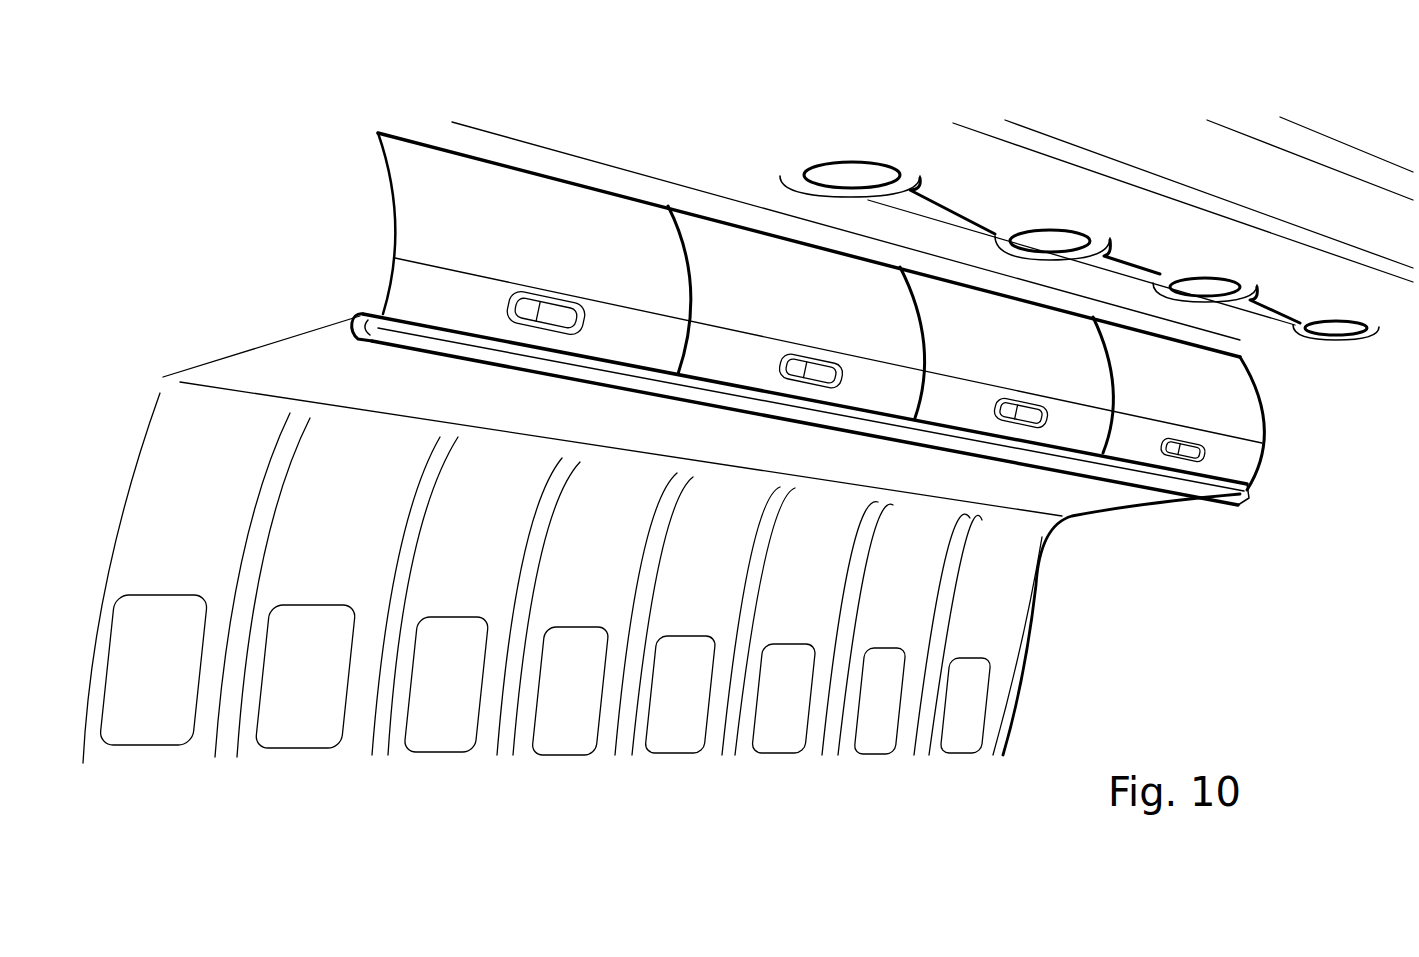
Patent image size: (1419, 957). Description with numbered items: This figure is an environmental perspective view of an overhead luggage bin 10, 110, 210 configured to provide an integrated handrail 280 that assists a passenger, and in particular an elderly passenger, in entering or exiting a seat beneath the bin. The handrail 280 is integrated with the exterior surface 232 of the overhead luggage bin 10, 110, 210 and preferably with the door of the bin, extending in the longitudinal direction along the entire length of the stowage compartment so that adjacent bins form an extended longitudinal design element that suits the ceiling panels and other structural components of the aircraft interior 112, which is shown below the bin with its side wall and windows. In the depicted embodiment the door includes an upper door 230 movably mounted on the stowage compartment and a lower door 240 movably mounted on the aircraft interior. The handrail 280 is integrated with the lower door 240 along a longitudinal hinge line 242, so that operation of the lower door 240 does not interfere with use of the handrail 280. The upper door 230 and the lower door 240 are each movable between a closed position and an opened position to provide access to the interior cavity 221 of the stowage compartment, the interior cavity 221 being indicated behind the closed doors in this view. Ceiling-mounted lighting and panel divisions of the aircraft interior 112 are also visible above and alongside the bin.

The overhead luggage bin 10 is at (744, 258).
The overhead luggage bin 110 is at (821, 281).
The overhead luggage bin 210 is at (821, 281).
The interior cavity 221 is at (563, 223).
The upper door 230 is at (430, 210).
The exterior surface 232 is at (524, 242).
The lower door 240 is at (415, 286).
The longitudinal hinge line 242 is at (1163, 470).
The integrated handrail 280 is at (433, 353).
The aircraft interior 112 is at (1111, 715).